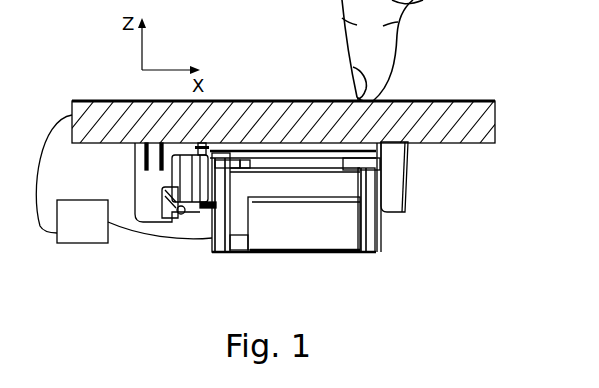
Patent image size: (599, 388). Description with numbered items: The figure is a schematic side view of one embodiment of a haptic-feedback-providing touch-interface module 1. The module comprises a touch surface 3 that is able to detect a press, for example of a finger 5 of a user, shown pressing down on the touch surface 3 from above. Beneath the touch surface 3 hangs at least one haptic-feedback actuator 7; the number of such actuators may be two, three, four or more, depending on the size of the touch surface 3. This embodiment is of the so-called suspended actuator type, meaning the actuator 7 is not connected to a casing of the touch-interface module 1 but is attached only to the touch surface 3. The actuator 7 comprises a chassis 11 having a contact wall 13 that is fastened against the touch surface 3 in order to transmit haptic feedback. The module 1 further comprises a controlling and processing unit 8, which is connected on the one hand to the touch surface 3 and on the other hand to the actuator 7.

The touch-interface module 1 is at (170, 281).
The touch surface 3 is at (232, 101).
The finger 5 is at (340, 4).
The haptic-feedback actuator 7 is at (394, 234).
The controlling and processing unit 8 is at (124, 179).
The chassis 11 is at (390, 197).
The contact wall 13 is at (348, 150).